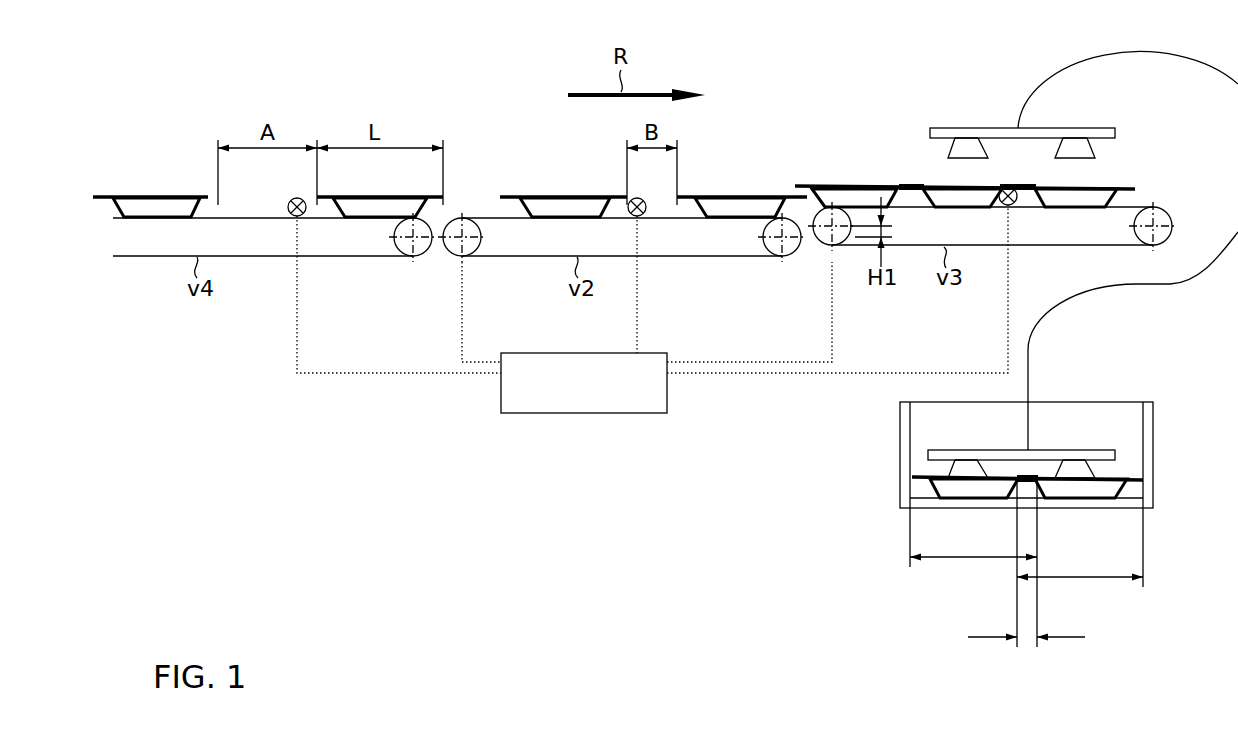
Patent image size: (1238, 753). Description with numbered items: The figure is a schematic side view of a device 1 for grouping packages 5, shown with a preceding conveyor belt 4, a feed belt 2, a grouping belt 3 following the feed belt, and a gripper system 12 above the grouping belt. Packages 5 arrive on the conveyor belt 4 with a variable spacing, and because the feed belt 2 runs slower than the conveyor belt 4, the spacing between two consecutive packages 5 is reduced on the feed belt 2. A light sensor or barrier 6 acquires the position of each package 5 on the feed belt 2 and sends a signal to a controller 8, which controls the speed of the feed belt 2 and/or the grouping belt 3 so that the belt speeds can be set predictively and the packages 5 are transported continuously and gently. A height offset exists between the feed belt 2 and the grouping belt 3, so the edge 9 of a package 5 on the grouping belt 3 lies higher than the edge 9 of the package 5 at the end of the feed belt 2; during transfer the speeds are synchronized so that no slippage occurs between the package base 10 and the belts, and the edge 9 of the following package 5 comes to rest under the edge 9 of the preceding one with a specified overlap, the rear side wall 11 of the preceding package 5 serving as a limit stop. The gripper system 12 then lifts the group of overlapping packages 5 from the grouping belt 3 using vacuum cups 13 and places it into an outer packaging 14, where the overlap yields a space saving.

The device 1 is at (808, 72).
The feed belt 2 is at (694, 246).
The grouping belt 3 is at (1064, 233).
The conveyor belt 4 is at (262, 255).
The package 5 is at (157, 191).
The light sensor or barrier 6 is at (290, 200).
The controller 8 is at (626, 401).
The edge 9 is at (788, 193).
The package base 10 is at (150, 219).
The rear side wall 11 is at (115, 209).
The gripper system 12 is at (1082, 128).
The vacuum cups 13 is at (1095, 150).
The outer packaging 14 is at (900, 442).